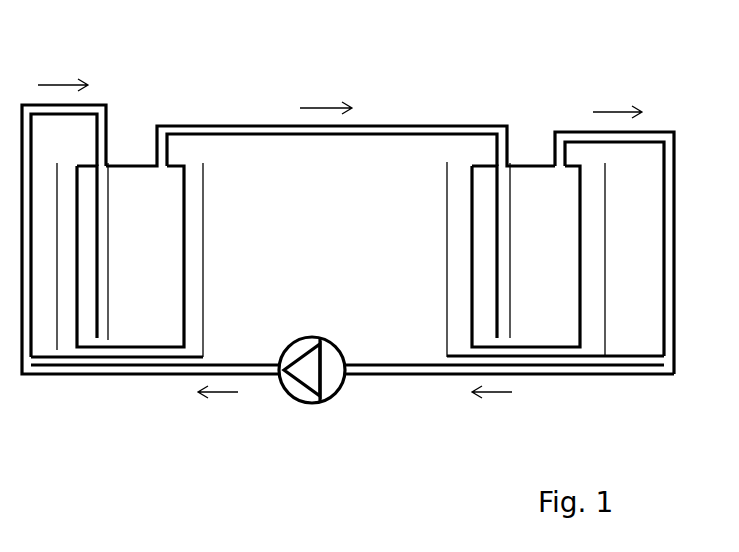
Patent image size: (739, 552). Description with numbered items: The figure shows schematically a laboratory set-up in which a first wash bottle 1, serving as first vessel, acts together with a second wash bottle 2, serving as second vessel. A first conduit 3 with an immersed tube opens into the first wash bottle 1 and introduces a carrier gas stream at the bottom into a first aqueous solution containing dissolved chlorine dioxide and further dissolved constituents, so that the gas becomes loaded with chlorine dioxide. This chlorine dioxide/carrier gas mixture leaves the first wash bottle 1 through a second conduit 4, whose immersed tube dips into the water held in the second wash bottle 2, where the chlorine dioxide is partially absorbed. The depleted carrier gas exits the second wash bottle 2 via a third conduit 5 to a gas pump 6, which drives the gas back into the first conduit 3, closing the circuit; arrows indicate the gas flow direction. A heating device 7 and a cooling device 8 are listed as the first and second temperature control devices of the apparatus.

The first wash bottle 1 is at (140, 322).
The second wash bottle 2 is at (546, 320).
The first conduit 3 is at (105, 170).
The second conduit 4 is at (356, 126).
The third conduit 5 is at (650, 136).
The gas pump 6 is at (300, 398).
The heating device 7 is at (60, 347).
The cooling device 8 is at (595, 343).